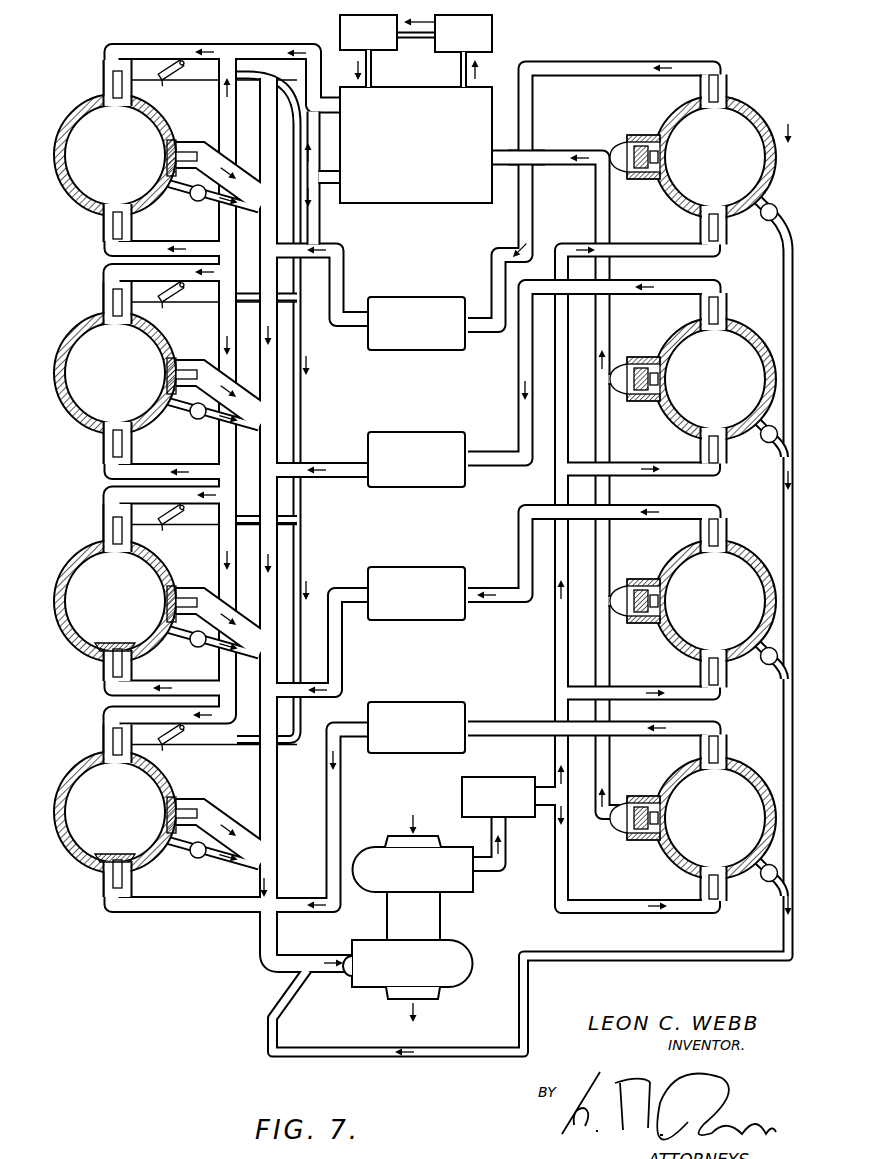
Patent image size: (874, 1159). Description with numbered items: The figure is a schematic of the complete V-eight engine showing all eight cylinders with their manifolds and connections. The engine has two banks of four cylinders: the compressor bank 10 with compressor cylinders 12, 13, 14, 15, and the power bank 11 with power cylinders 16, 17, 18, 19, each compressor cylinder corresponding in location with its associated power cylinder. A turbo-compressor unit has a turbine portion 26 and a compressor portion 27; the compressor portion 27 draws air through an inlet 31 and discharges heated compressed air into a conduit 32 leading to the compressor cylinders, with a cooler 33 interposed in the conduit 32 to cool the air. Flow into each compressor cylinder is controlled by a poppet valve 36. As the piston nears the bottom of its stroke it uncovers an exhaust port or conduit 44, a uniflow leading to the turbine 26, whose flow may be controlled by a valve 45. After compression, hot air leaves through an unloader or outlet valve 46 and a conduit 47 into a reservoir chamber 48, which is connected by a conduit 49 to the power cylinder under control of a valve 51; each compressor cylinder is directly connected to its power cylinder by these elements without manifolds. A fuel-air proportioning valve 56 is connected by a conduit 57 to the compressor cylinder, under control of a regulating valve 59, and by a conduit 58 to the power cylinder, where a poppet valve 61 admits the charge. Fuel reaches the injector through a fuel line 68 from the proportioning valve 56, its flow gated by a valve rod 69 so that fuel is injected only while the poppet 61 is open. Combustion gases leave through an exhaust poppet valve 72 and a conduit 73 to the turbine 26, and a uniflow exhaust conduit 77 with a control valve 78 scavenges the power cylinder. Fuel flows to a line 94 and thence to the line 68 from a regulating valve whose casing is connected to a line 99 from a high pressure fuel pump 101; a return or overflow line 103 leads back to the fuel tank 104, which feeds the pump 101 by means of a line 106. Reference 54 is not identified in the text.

The compressor bank 10 is at (712, 927).
The power bank 11 is at (136, 947).
The compressor cylinder 12 is at (760, 774).
The compressor cylinder 13 is at (760, 557).
The compressor cylinder 14 is at (760, 335).
The compressor cylinder 15 is at (760, 113).
The power cylinder 16 is at (61, 766).
The power cylinder 17 is at (61, 555).
The power cylinder 18 is at (61, 327).
The power cylinder 19 is at (61, 109).
The turbine portion 26 is at (471, 957).
The compressor portion 27 is at (368, 847).
The inlet 31 is at (426, 837).
The conduit 32 is at (636, 245).
The cooler 33 is at (484, 777).
The poppet valve 36 is at (718, 208).
The exhaust port or conduit 44 is at (783, 271).
The valve 45 is at (775, 207).
The unloader or outlet valve 46 is at (713, 104).
The conduit 47 is at (633, 63).
The reservoir chamber 48 is at (417, 432).
The conduit 49 is at (345, 270).
The valve 51 is at (104, 213).
The exhaust outlet 54 is at (433, 999).
The fuel-air proportioning valve 56 is at (407, 203).
The conduit 57 is at (558, 168).
The conduit 58 is at (162, 44).
The regulating valve 59 is at (661, 166).
The poppet valve 61 is at (111, 99).
The fuel line 68 is at (286, 110).
The valve or piston rod 69 is at (184, 82).
The exhaust poppet valve 72 is at (167, 148).
The conduit 73 is at (252, 185).
The uniflow exhaust conduit 77 is at (235, 213).
The control valve 78 is at (190, 198).
The line 94 is at (328, 185).
The line 99 is at (372, 75).
The fuel pump 101 is at (340, 20).
The return or overflow line 103 is at (460, 65).
The fuel tank or supply 104 is at (492, 25).
The line 106 is at (437, 17).